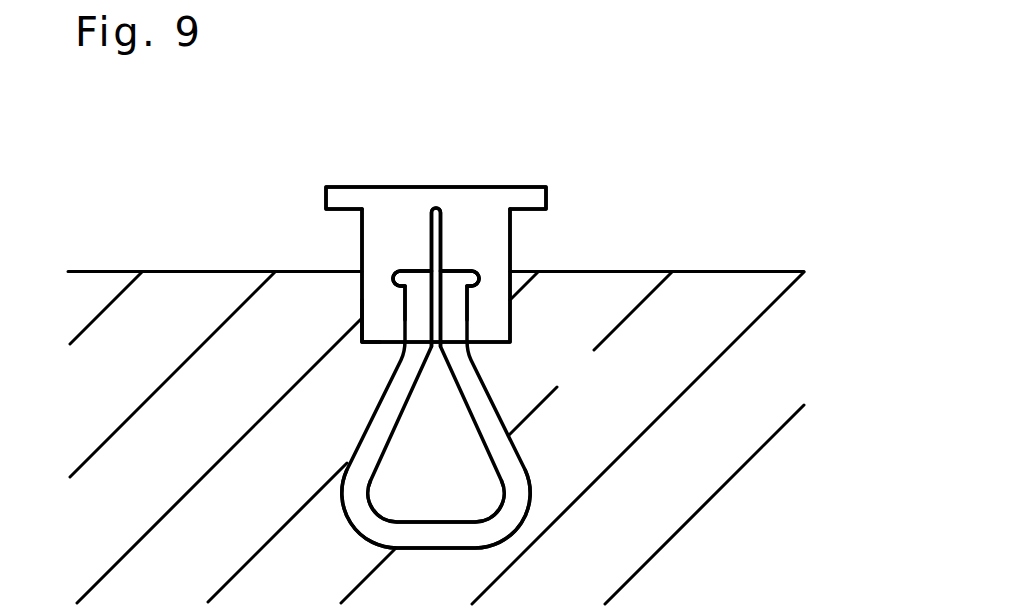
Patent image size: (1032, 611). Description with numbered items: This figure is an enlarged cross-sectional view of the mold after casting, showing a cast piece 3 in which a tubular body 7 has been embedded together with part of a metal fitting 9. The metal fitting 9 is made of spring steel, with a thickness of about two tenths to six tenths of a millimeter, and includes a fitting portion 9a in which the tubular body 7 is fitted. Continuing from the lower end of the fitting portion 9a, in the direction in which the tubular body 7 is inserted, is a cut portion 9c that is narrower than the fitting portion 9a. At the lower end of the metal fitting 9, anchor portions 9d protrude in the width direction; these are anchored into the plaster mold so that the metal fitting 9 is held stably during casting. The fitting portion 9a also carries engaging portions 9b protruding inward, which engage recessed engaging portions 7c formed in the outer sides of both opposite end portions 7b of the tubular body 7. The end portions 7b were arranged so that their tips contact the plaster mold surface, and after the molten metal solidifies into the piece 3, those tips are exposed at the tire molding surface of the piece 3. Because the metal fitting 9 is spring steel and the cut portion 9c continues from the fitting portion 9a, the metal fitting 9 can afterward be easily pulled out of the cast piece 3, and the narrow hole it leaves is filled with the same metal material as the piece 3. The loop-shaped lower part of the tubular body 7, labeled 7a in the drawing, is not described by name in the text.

The piece 3 is at (212, 259).
The tubular body 7 is at (552, 450).
The loop portion 7a is at (372, 506).
The end portions 7b is at (460, 303).
The engaging portions 7c is at (462, 318).
The metal fitting 9 is at (512, 152).
The fitting portion 9a is at (422, 259).
The engaging portions 9b is at (402, 323).
The cut portion 9c is at (432, 234).
The anchor portions 9d is at (338, 197).